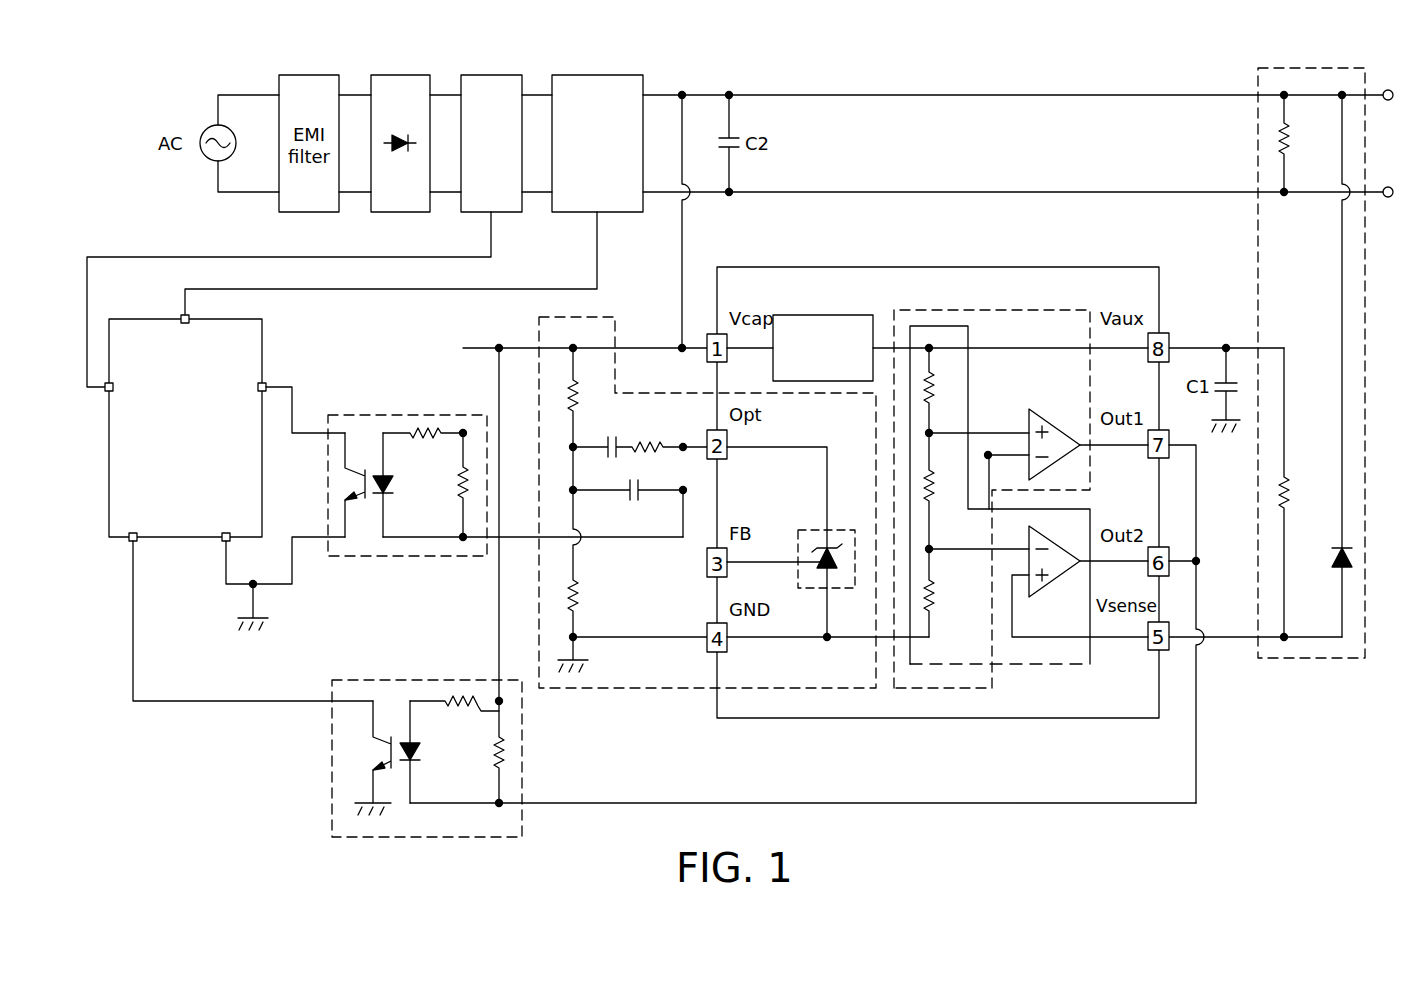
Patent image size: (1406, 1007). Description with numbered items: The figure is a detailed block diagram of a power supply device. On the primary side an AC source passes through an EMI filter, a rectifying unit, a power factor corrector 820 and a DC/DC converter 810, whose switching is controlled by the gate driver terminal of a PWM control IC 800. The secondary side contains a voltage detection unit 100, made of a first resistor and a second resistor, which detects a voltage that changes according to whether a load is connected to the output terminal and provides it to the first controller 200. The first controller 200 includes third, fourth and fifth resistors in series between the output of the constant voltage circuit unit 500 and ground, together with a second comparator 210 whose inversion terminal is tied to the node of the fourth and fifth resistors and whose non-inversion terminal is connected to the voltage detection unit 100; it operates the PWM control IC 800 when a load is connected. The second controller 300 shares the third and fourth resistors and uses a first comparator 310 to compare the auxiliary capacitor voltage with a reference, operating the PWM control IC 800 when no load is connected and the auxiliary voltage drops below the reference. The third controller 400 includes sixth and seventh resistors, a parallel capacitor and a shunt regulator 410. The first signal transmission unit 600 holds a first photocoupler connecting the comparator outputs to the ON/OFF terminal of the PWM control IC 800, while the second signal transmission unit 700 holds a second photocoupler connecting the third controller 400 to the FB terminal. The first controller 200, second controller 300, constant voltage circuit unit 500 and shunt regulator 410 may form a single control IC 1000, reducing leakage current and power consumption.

The voltage detection unit 100 is at (1330, 68).
The control IC 1000 is at (1130, 267).
The first controller 200 is at (1029, 514).
The second comparator 210 is at (1053, 583).
The second controller 300 is at (1021, 483).
The first comparator 310 is at (1053, 422).
The third controller 400 is at (632, 689).
The shunt regulator 410 is at (815, 530).
The constant voltage circuit unit 500 is at (855, 315).
The first signal transmission unit 600 is at (372, 680).
The second signal transmission unit 700 is at (370, 414).
The PWM control IC 800 is at (262, 345).
The DC/DC converter 810 is at (612, 75).
The power factor corrector 820 is at (492, 75).